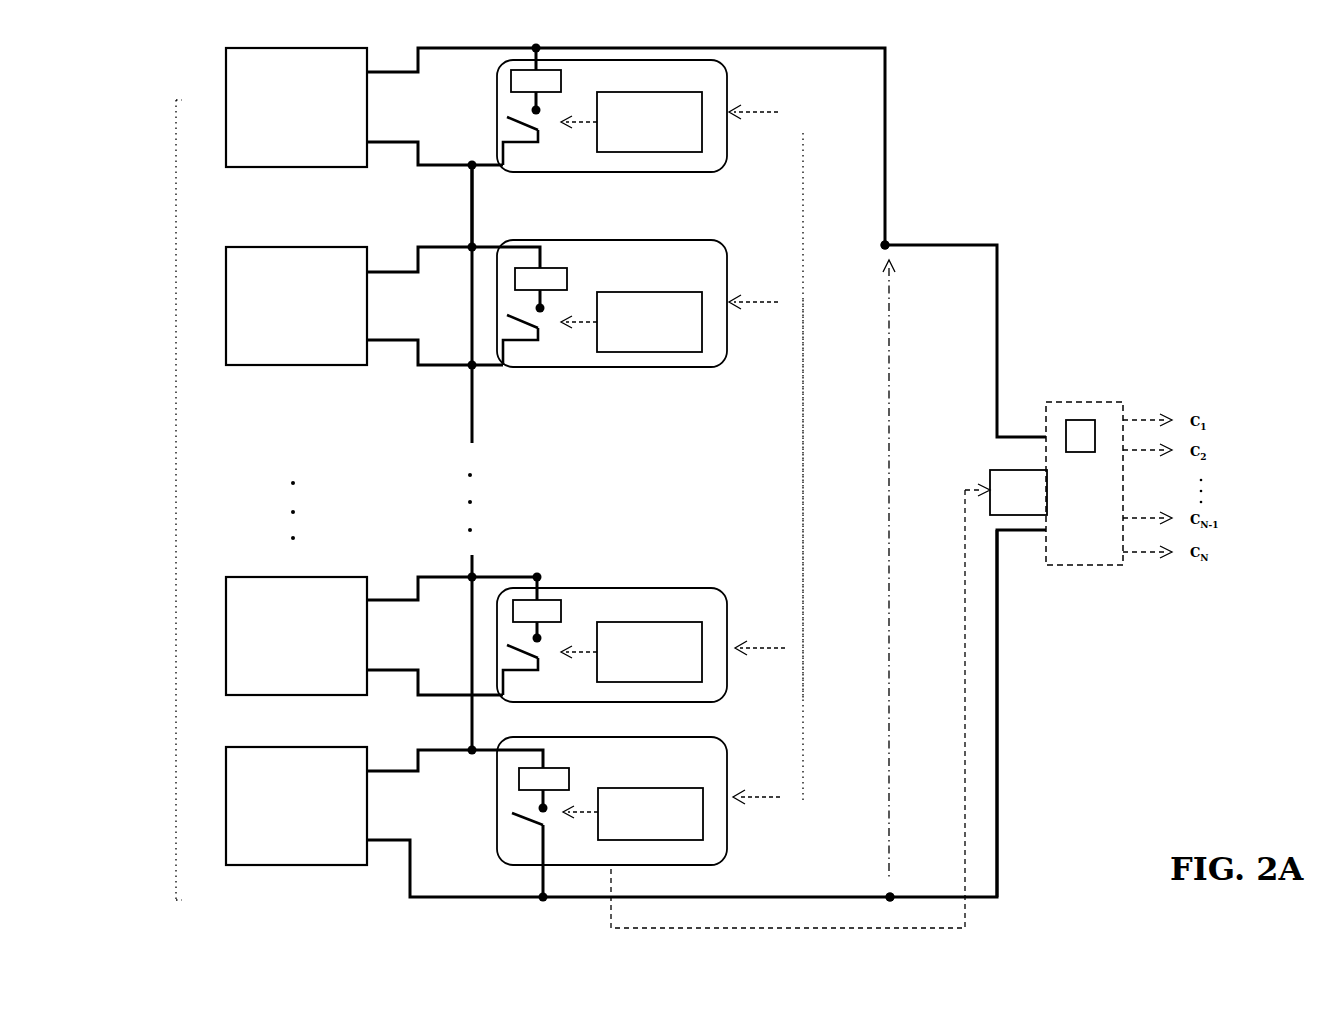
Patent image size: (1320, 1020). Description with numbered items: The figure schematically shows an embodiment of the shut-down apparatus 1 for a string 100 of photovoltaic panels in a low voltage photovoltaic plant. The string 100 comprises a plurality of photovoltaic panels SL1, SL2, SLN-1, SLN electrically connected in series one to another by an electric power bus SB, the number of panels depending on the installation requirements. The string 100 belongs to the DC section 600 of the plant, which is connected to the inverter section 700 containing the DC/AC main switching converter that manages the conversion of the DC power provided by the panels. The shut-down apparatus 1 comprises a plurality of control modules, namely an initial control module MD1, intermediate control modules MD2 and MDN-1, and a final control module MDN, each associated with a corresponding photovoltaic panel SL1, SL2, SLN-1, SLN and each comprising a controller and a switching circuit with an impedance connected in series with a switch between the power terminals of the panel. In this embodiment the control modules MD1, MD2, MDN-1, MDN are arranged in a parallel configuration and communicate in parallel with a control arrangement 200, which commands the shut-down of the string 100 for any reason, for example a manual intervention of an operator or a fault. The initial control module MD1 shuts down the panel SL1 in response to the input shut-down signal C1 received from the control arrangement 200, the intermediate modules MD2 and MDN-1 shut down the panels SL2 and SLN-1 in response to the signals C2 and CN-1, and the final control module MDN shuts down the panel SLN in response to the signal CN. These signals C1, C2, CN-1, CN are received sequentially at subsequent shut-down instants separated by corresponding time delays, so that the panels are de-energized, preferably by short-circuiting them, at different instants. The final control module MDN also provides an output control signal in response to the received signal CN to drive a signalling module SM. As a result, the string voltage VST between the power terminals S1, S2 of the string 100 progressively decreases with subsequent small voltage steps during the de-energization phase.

The shut-down apparatus 1 is at (818, 519).
The string of photovoltaic panels 100 is at (146, 499).
The control arrangement 200 is at (1088, 420).
The DC section 600 is at (1030, 842).
The inverter section 700 is at (1092, 565).
The electric power bus SB is at (455, 190).
The power terminal of the string S1 is at (899, 233).
The power terminal of the string S2 is at (902, 886).
The signalling module SM is at (1018, 492).
The string voltage VST is at (903, 570).
The initial control module MD1 is at (727, 158).
The intermediate control module MD2 is at (727, 352).
The intermediate control module MDN-1 is at (756, 696).
The final control module MDN is at (727, 830).
The photovoltaic panel SL1 is at (296, 107).
The photovoltaic panel SL2 is at (296, 306).
The photovoltaic panel SLN-1 is at (296, 636).
The photovoltaic panel SLN is at (296, 806).
The input shut-down signal C1 is at (753, 105).
The input shut-down signal C2 is at (753, 295).
The input shut-down signal CN-1 is at (760, 631).
The input shut-down signal CN is at (756, 784).